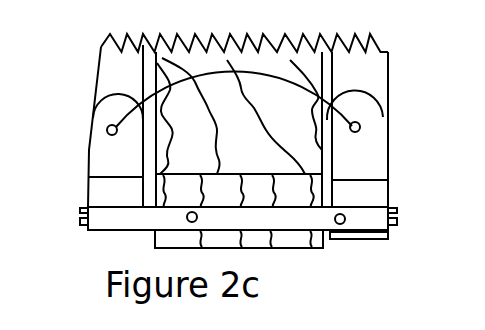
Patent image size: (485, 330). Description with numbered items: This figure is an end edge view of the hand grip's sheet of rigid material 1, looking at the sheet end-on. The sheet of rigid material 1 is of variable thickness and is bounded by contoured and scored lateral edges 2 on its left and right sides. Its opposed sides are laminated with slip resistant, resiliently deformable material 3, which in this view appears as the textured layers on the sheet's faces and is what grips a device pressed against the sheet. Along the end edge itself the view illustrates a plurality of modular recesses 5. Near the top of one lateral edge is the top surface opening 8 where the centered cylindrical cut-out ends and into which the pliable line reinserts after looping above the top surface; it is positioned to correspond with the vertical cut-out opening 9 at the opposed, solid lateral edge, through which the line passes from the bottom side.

The sheet of rigid material 1 is at (393, 196).
The contoured and scored lateral edges 2 is at (74, 228).
The slip resistant, resiliently deformable material 3 is at (283, 189).
The modular recesses 5 is at (188, 219).
The top surface opening of the cut-out lateral edge 8 is at (108, 127).
The vertical cut-out opening at the solid lateral edge 9 is at (360, 125).